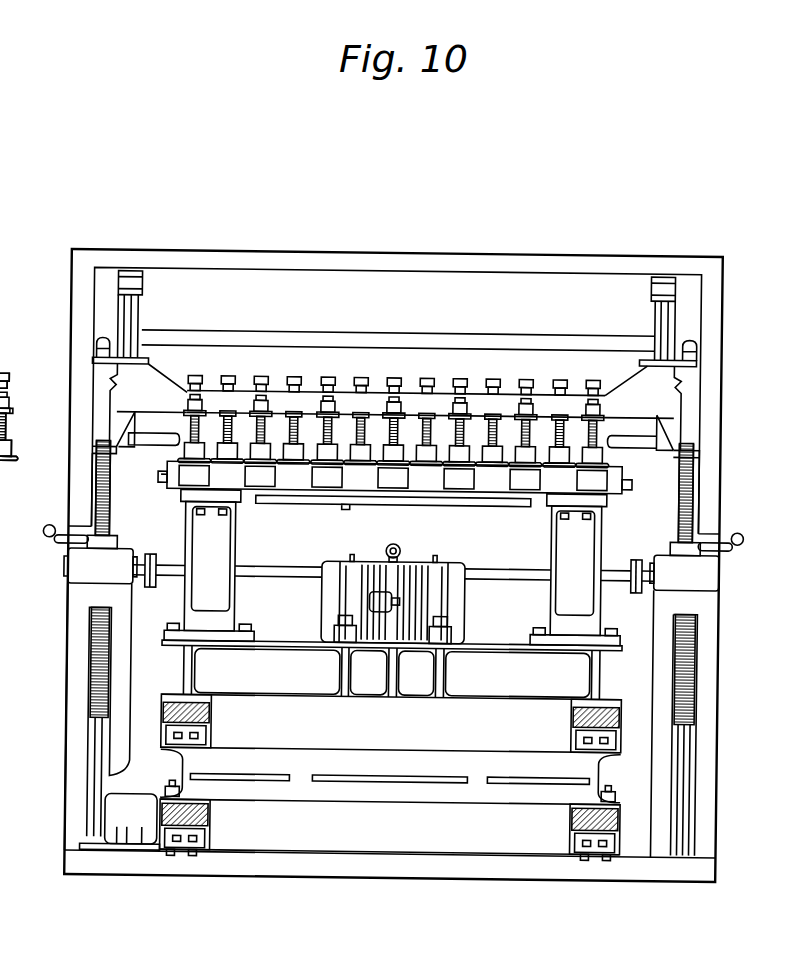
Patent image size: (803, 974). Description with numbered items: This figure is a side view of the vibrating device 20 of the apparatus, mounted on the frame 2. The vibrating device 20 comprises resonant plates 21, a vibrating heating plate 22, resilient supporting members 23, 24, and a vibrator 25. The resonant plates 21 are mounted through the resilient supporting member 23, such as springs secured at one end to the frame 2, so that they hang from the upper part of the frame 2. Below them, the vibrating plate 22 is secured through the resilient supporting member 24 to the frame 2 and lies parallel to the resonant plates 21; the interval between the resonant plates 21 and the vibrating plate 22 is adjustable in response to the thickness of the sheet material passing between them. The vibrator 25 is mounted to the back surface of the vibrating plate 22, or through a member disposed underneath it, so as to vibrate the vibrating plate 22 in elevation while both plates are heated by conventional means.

The vibrating device 20 is at (614, 244).
The frame 2 is at (661, 375).
The resilient supporting member 23 is at (586, 426).
The resonant plates 21 is at (606, 462).
The vibrating heating plate 22 is at (604, 487).
The vibrator 25 is at (449, 601).
The resilient supporting member 24 is at (572, 720).